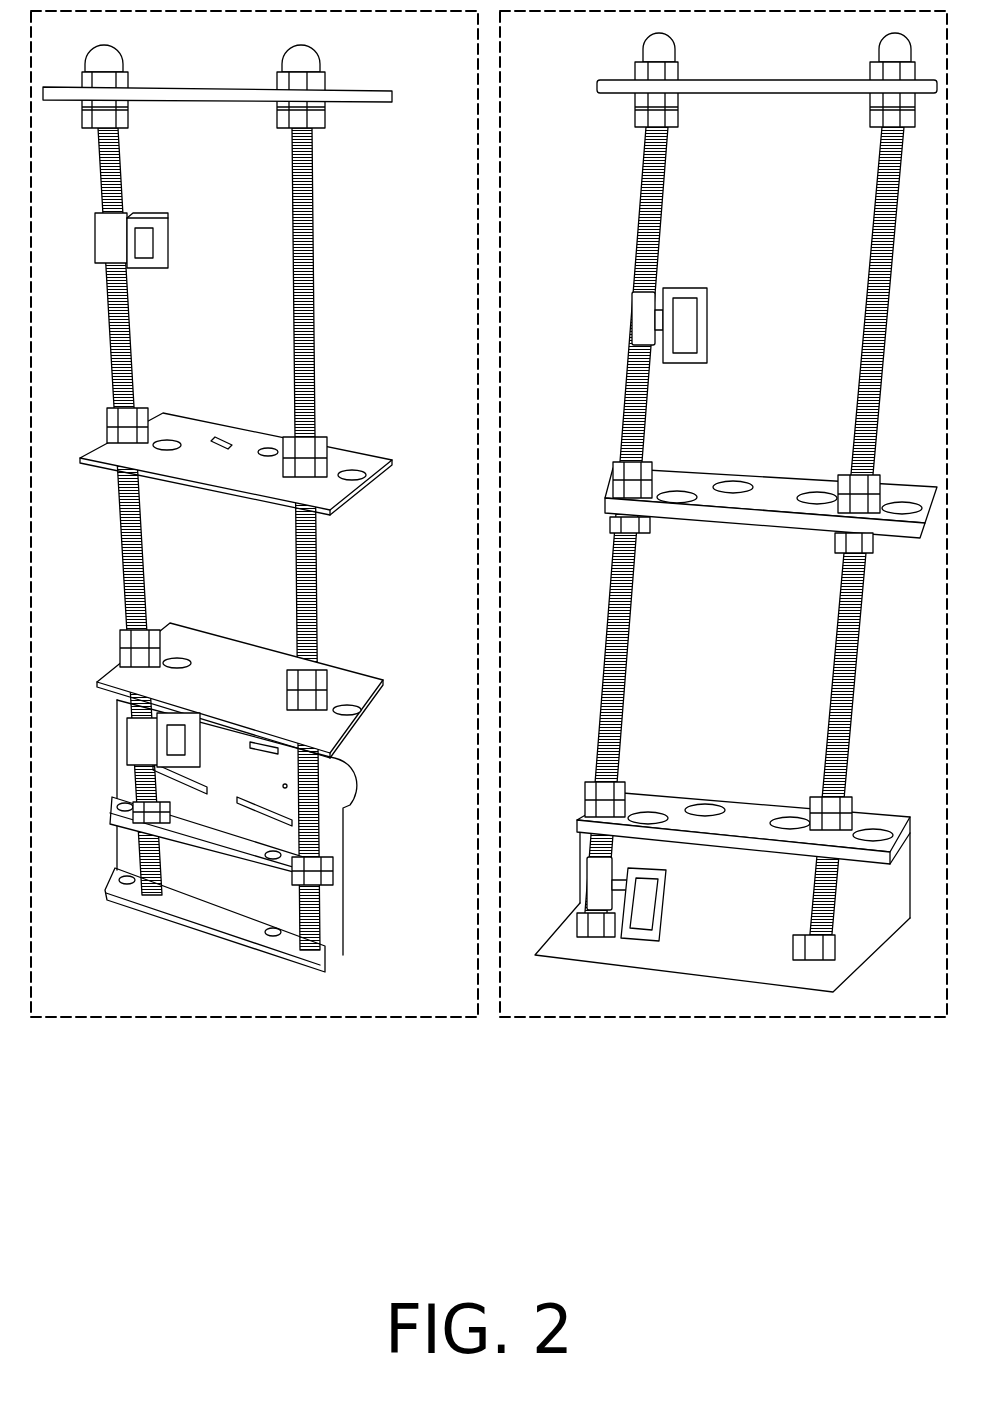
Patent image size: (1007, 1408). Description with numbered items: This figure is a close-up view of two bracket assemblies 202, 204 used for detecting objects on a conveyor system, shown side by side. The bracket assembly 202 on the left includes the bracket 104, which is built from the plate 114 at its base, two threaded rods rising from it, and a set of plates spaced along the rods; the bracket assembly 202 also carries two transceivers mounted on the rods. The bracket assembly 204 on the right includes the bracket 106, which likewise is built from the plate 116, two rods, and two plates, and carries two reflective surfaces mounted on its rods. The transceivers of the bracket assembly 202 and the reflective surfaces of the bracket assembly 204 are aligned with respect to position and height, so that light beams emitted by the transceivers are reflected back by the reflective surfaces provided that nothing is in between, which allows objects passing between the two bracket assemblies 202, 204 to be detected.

The bracket 104 is at (218, 50).
The bracket 106 is at (779, 50).
The plate 114 is at (271, 836).
The plate 116 is at (722, 875).
The bracket assembly 202 is at (254, 536).
The bracket assembly 204 is at (723, 536).